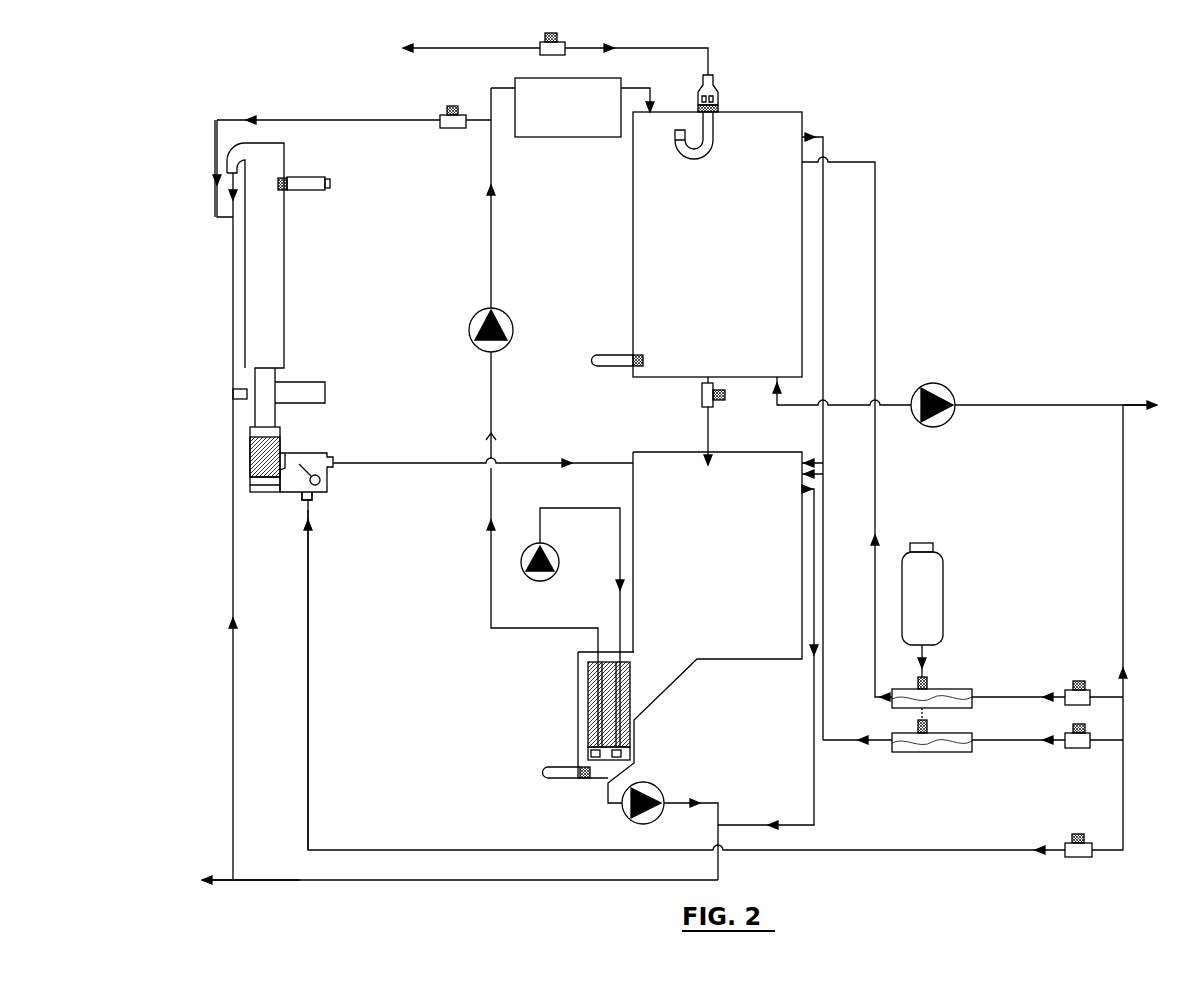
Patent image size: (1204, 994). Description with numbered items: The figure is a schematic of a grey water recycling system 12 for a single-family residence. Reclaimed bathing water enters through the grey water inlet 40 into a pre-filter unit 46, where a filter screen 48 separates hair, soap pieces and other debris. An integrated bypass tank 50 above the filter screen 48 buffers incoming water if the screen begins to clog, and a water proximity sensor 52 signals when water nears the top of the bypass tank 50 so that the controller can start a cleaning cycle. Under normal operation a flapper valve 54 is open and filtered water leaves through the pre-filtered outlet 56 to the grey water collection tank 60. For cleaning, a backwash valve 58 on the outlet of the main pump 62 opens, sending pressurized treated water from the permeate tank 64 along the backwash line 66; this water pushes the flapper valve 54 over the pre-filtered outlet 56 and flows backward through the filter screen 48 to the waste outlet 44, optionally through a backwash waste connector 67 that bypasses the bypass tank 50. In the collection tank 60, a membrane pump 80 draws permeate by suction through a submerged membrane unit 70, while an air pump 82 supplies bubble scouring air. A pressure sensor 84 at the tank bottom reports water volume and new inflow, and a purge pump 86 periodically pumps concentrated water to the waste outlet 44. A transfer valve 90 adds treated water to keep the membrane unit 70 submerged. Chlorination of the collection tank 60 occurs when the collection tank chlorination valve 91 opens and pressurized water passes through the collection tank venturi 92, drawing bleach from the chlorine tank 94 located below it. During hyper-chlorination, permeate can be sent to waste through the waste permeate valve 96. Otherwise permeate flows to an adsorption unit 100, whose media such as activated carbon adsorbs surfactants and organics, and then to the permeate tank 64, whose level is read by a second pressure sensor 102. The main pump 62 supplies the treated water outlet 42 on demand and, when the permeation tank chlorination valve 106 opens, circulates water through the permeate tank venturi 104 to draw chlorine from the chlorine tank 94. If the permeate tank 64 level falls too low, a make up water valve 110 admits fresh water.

The grey water recycling system 12 is at (185, 556).
The grey water inlet 40 is at (302, 382).
The treated water outlet 42 is at (1140, 410).
The waste outlet 44 is at (220, 882).
The pre-filter unit 46 is at (198, 262).
The filter screen 48 is at (278, 446).
The bypass tank 50 is at (284, 265).
The water proximity sensor 52 is at (304, 177).
The flapper valve 54 is at (300, 493).
The pre-filtered outlet 56 is at (330, 458).
The backwash valve 58 is at (1075, 857).
The grey water collection tank 60 is at (770, 659).
The main pump 62 is at (950, 388).
The permeate tank 64 is at (785, 112).
The backwash line 66 is at (308, 670).
The backwash waste connector 67 is at (240, 399).
The membrane unit 70 is at (580, 717).
The membrane pump 80 is at (513, 330).
The air pump 82 is at (558, 556).
The pressure sensor 84 is at (548, 780).
The purge pump 86 is at (660, 789).
The transfer valve 90 is at (712, 407).
The collection tank chlorination valve 91 is at (1092, 745).
The collection tank venturi 92 is at (895, 752).
The chlorine tank 94 is at (945, 590).
The waste permeate valve 96 is at (440, 115).
The adsorption unit 100 is at (580, 137).
The second pressure sensor 102 is at (612, 366).
The permeate tank venturi 104 is at (950, 689).
The permeation tank chlorination valve 106 is at (1090, 692).
The make up water valve 110 is at (565, 46).